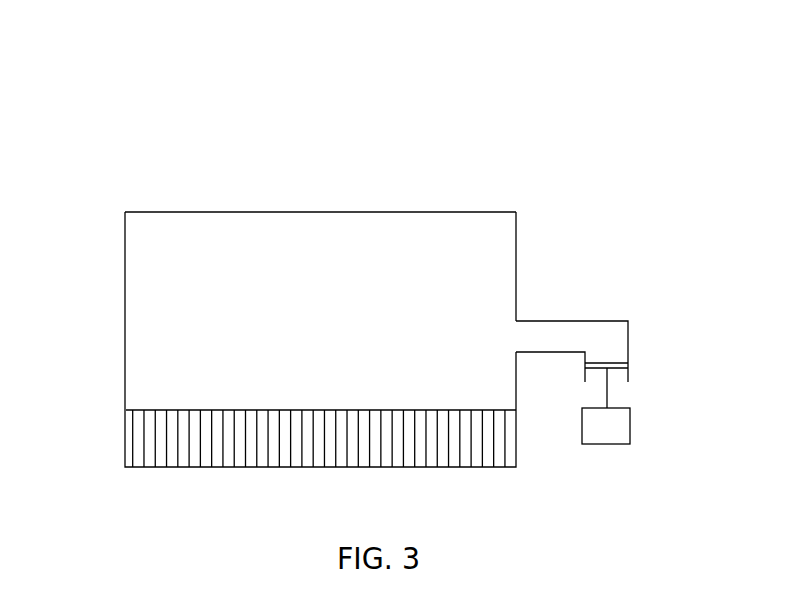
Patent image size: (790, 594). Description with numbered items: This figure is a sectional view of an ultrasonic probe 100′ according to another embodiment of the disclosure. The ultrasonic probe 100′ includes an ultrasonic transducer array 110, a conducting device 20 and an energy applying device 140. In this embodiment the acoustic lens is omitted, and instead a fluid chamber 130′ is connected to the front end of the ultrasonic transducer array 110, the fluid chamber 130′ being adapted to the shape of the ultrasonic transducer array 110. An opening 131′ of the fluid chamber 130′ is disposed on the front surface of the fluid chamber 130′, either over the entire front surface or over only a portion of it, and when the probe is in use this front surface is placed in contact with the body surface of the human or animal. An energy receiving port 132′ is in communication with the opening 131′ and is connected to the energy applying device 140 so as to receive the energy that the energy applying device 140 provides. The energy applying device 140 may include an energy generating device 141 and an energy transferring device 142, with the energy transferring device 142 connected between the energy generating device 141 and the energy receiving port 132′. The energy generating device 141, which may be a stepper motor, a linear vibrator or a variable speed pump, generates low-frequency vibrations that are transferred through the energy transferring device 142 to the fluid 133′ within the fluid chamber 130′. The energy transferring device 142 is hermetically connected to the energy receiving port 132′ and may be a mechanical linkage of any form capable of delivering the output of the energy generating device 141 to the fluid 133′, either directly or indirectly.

The ultrasonic probe 100′ is at (148, 42).
The conducting device 20 is at (148, 192).
The fluid chamber 130′ is at (138, 298).
The opening 131′ is at (431, 197).
The energy receiving port 132′ is at (519, 331).
The fluid 133′ is at (340, 315).
The ultrasonic transducer array 110 is at (127, 435).
The energy applying device 140 is at (608, 298).
The energy generating device 141 is at (625, 423).
The energy transferring device 142 is at (615, 365).